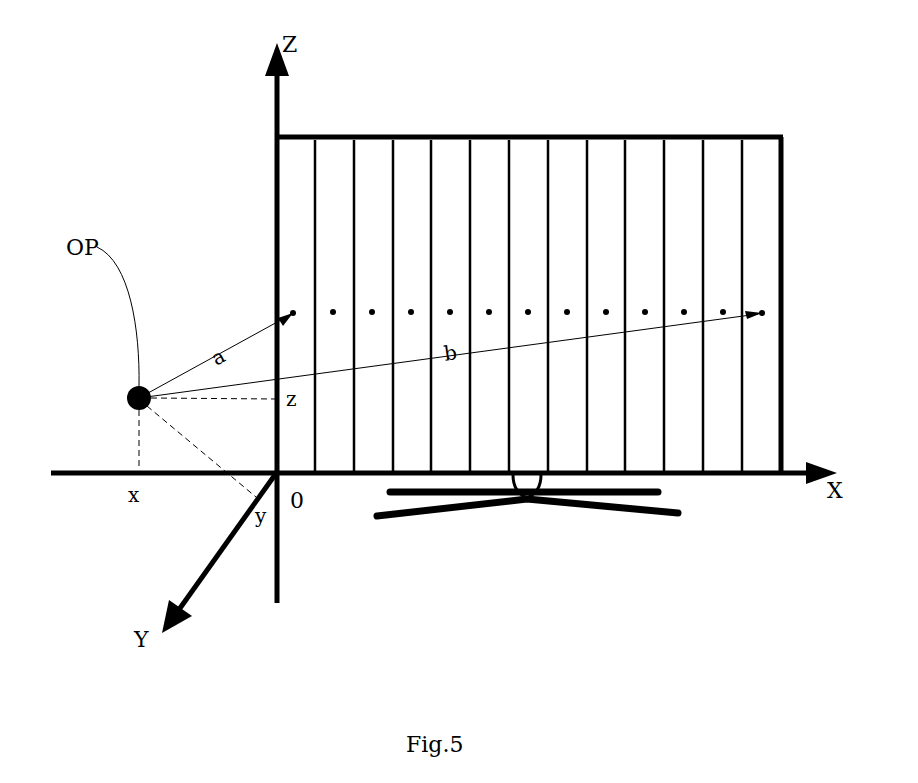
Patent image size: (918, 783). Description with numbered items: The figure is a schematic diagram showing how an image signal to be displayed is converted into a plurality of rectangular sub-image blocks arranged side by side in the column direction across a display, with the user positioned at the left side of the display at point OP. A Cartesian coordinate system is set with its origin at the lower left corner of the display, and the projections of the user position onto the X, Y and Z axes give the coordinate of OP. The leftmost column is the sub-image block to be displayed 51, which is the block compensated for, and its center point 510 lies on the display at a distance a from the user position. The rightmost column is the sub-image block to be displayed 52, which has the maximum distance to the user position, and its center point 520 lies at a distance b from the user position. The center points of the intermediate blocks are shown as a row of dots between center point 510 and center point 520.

The sub-image block to be displayed which is compensated for 51 is at (291, 205).
The sub-image block to be displayed which has a maximum distance to the user positio 52 is at (760, 203).
The center point of a geometry graphic of the sub-image block to be displayed 510 is at (293, 311).
The center point of a geometry graphic of the sub-image block to be displayed 520 is at (762, 310).